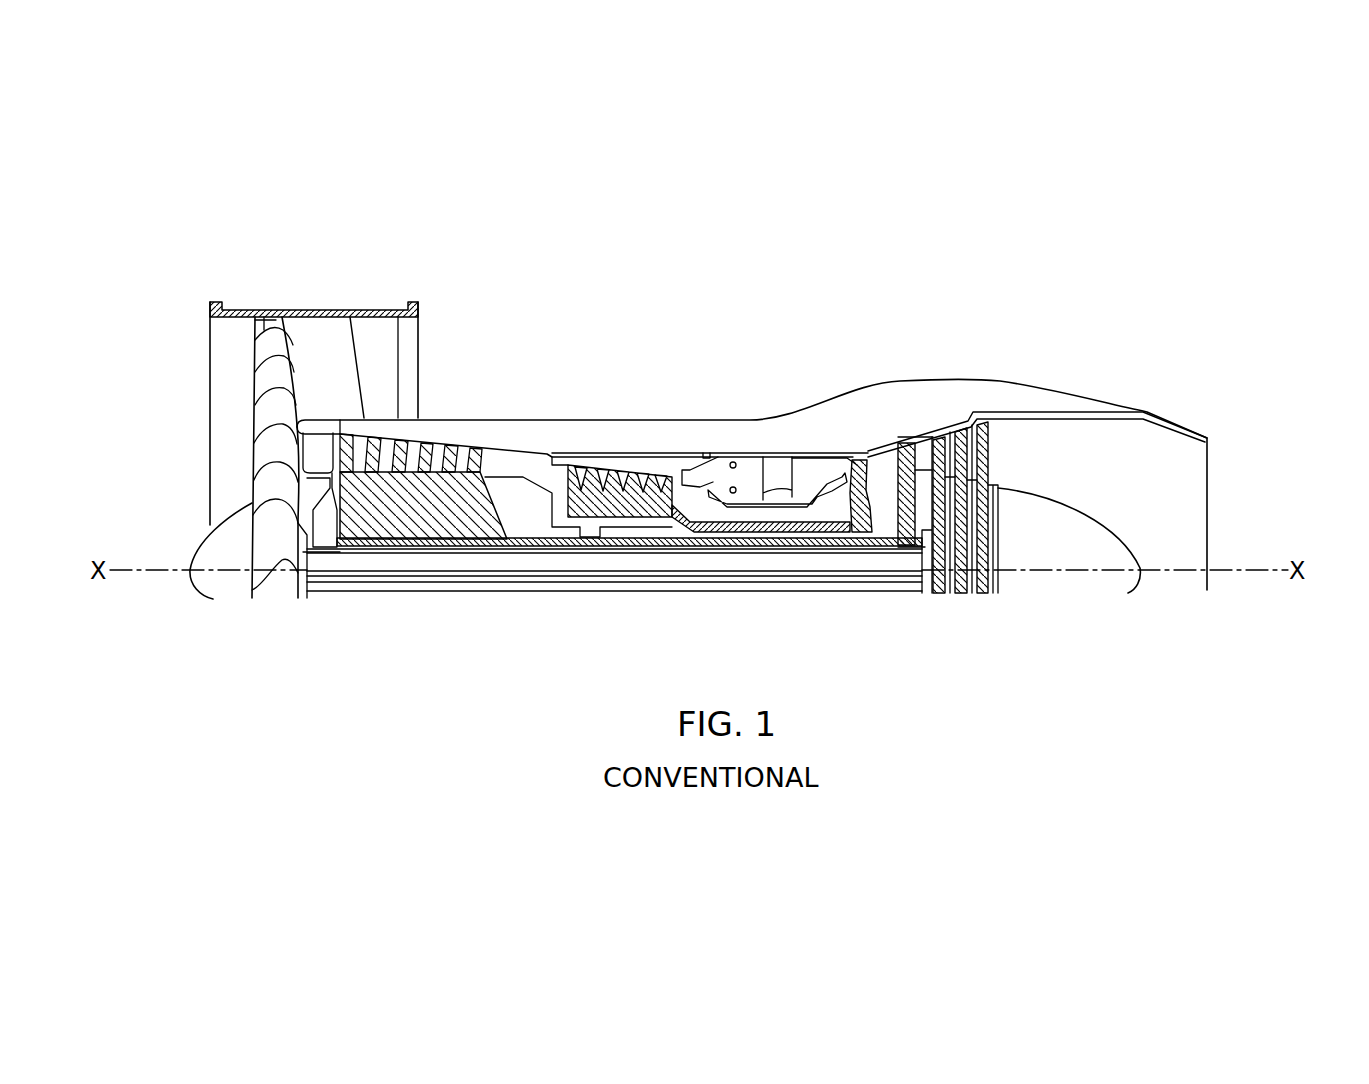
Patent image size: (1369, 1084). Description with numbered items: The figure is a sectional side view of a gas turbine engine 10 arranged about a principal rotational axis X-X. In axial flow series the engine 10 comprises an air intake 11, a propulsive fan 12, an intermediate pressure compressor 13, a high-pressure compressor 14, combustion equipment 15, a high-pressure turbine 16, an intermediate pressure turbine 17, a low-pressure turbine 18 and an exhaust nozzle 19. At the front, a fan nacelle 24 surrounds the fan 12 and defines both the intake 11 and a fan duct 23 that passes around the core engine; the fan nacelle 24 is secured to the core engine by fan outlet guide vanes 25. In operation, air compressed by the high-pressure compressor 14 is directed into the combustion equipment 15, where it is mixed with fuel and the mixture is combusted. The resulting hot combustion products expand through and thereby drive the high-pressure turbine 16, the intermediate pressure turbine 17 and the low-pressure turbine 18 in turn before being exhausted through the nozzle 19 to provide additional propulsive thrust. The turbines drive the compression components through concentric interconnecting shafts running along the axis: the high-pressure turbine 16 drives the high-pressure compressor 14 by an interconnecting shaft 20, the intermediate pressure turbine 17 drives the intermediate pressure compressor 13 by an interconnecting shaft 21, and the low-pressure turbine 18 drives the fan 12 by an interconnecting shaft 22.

The gas turbine engine 10 is at (567, 358).
The air intake 11 is at (186, 437).
The propulsive fan 12 is at (270, 325).
The intermediate pressure compressor 13 is at (418, 490).
The high-pressure compressor 14 is at (612, 478).
The combustion equipment 15 is at (779, 436).
The high-pressure turbine 16 is at (858, 447).
The intermediate pressure turbine 17 is at (908, 443).
The low-pressure turbine 18 is at (962, 423).
The exhaust nozzle 19 is at (1193, 515).
The interconnecting shaft 20 is at (738, 534).
The interconnecting shaft 21 is at (798, 543).
The interconnecting shaft 22 is at (658, 563).
The fan duct 23 is at (327, 337).
The fan nacelle 24 is at (302, 308).
The fan outlet guide vanes 25 is at (410, 330).